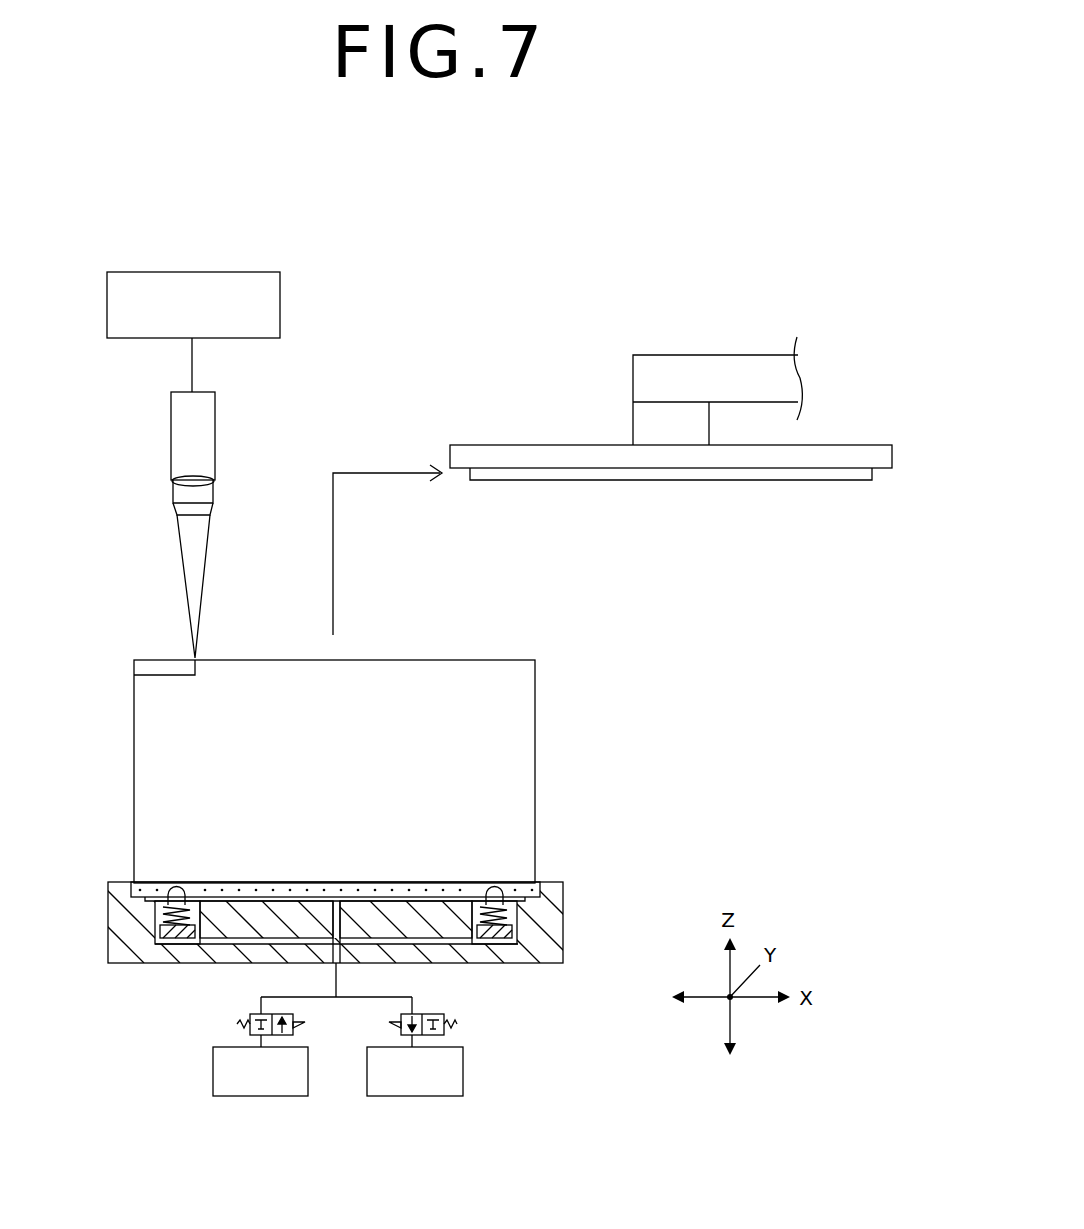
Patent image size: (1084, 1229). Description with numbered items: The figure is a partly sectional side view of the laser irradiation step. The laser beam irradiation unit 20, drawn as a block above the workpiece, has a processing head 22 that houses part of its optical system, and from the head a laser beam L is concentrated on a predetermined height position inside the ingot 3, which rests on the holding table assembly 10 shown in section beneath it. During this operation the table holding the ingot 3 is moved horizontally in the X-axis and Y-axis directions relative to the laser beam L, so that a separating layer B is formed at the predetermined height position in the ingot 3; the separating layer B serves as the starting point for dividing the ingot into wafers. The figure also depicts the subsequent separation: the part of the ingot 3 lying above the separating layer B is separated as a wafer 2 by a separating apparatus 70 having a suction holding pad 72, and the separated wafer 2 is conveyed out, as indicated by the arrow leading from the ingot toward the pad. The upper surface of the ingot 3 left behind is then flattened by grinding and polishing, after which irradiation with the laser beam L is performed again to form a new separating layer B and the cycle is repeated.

The laser beam irradiation unit 20 is at (181, 256).
The processing head 22 is at (215, 447).
The laser beam L is at (203, 597).
The ingot 3 is at (317, 773).
The separating layer B is at (162, 670).
The suction holding pad 72 is at (503, 443).
The wafer 2 is at (572, 481).
The separating apparatus 70 is at (672, 348).
The holding table assembly 10 is at (567, 871).